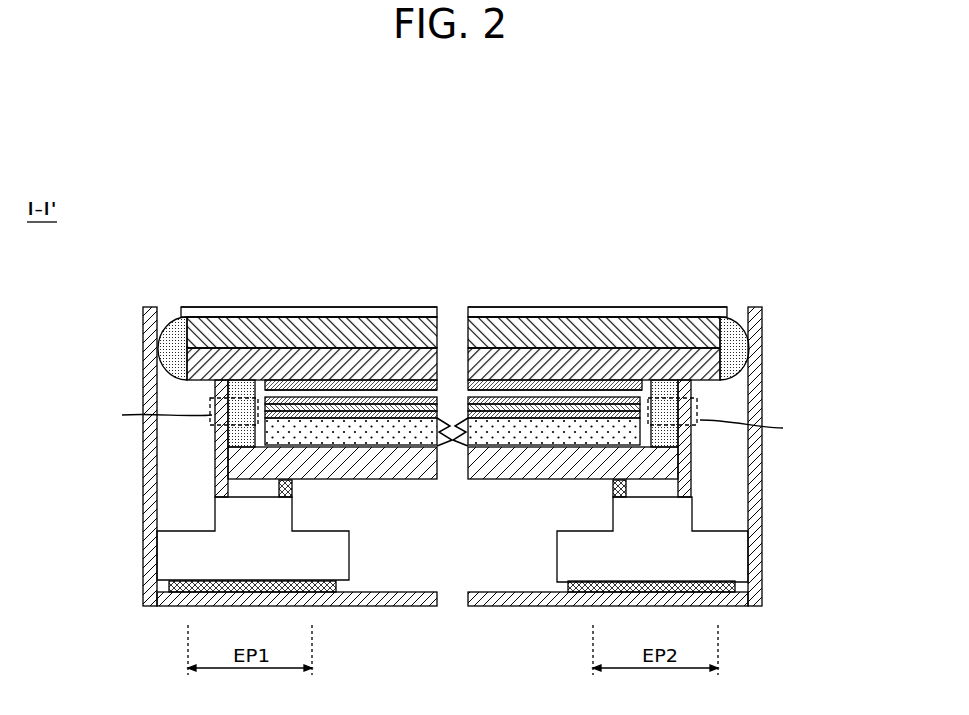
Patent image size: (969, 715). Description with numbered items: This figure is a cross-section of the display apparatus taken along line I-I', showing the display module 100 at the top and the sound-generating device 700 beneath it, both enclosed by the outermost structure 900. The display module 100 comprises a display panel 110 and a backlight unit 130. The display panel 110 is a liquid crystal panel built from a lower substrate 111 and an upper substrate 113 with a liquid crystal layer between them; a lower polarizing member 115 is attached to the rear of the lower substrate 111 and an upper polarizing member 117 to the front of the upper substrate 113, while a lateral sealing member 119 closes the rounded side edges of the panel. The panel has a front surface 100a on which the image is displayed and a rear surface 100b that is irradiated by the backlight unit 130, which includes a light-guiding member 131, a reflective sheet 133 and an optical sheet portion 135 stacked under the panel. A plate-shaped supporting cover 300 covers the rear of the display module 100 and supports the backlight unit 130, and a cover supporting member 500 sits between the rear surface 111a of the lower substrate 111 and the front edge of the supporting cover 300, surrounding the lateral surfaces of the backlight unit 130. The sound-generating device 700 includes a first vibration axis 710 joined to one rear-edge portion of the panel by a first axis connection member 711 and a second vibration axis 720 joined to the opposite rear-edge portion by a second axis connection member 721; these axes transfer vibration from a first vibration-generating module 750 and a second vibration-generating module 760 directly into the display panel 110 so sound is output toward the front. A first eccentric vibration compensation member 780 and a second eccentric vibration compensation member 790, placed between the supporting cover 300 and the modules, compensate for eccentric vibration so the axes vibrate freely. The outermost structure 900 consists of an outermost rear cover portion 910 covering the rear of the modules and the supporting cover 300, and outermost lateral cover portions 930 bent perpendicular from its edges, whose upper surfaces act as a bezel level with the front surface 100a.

The display module 100 is at (498, 319).
The display panel 110 is at (498, 300).
The backlight unit 130 is at (452, 340).
The lateral sealing member 119 is at (360, 252).
The upper polarizing member 117 is at (209, 307).
The upper substrate 113 is at (262, 333).
The lower substrate 111 is at (312, 372).
The lower polarizing member 115 is at (350, 340).
The optical sheet portion 135 is at (423, 390).
The light-guiding member 131 is at (493, 432).
The reflective sheet 133 is at (540, 442).
The supporting cover 300 is at (596, 460).
The cover supporting member 500 is at (663, 400).
The front surface 100a is at (706, 308).
The rear surface 100b is at (617, 392).
The rear surface of the lower substrate 111a is at (715, 396).
The outermost structure 900 is at (391, 463).
The outermost lateral cover portion 930 is at (145, 575).
The outermost rear cover portion 910 is at (400, 606).
The sound-generating device 700 is at (453, 486).
The first vibration axis 710 is at (235, 461).
The second vibration axis 720 is at (675, 462).
The first axis connection member 711 is at (217, 385).
The second axis connection member 721 is at (697, 411).
The first eccentric vibration compensation member 780 is at (280, 486).
The second eccentric vibration compensation member 790 is at (628, 487).
The first vibration-generating module 750 is at (167, 545).
The second vibration-generating module 760 is at (693, 544).